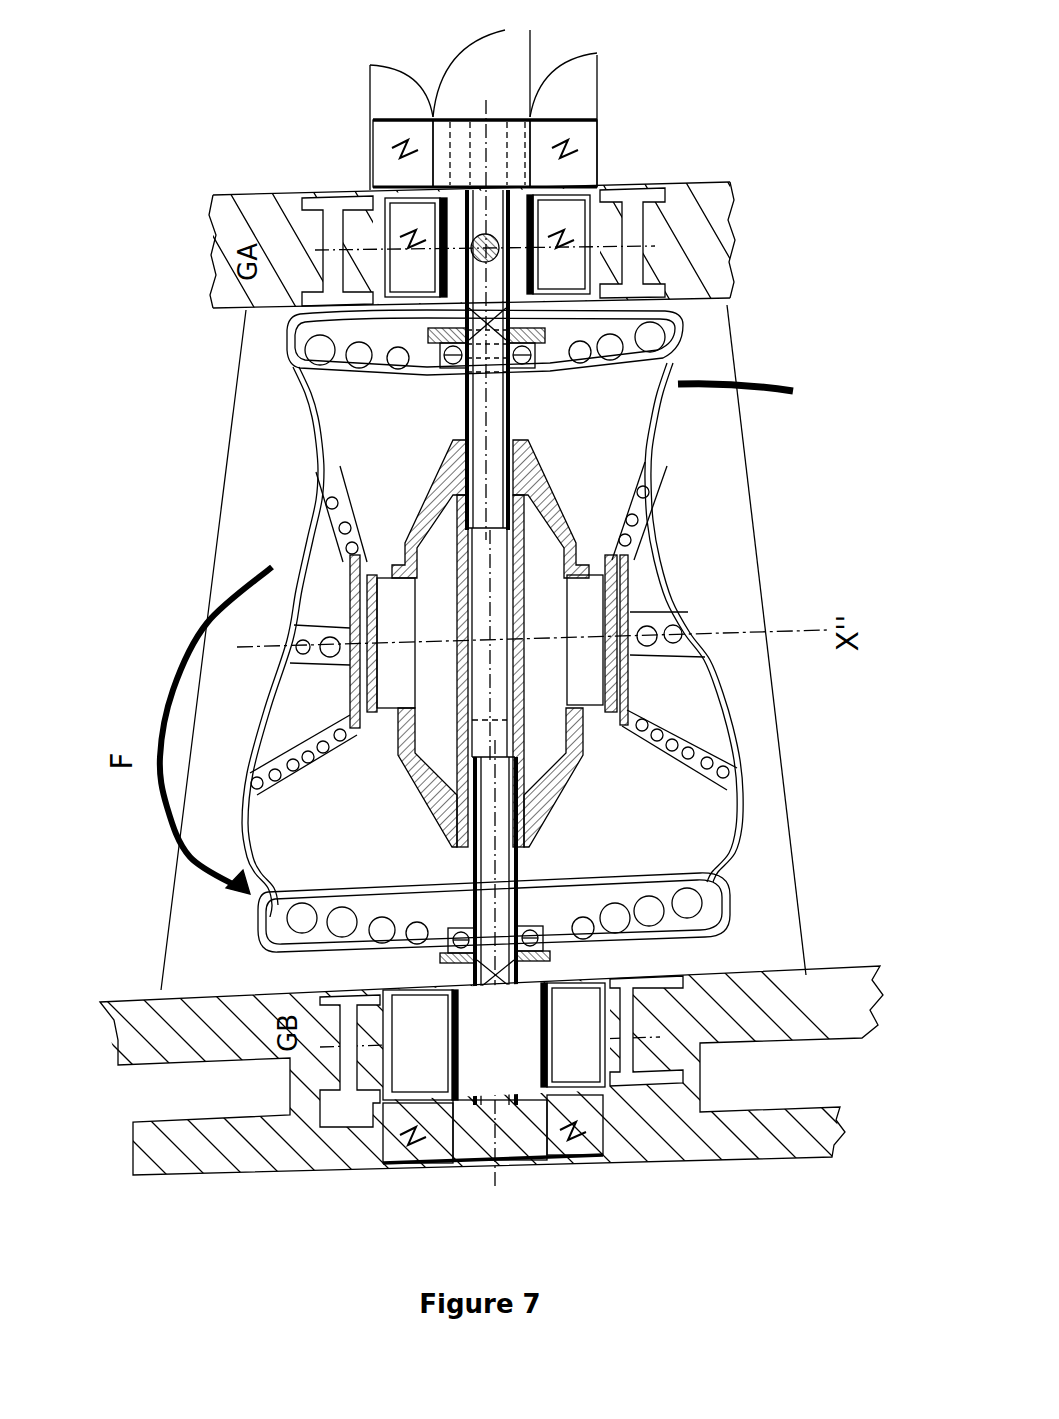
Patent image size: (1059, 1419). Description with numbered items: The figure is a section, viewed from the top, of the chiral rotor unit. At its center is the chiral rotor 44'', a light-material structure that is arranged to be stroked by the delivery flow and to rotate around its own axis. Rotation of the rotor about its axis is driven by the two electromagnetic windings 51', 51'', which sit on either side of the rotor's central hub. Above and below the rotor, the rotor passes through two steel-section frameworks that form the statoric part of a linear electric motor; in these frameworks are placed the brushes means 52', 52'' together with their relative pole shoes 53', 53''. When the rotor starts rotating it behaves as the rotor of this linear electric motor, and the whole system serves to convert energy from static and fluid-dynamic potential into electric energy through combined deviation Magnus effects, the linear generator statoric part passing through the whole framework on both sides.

The chiral rotor 44'' is at (455, 631).
The electromagnetic winding 51' is at (368, 719).
The electromagnetic winding 51'' is at (600, 717).
The brushes means 52' is at (573, 1124).
The brushes means 52'' is at (606, 184).
The pole shoe 53' is at (431, 1128).
The pole shoe 53'' is at (356, 188).